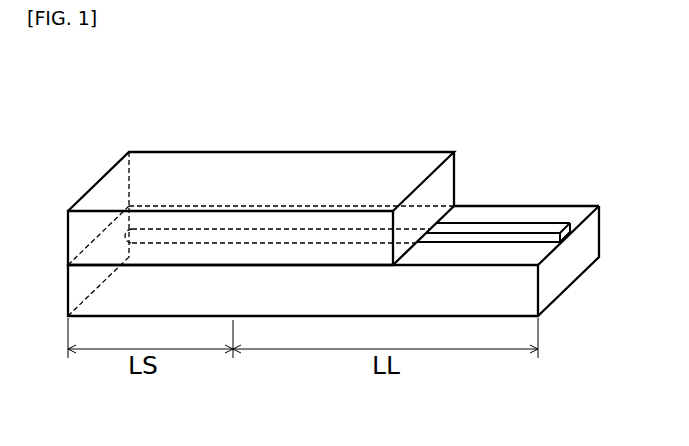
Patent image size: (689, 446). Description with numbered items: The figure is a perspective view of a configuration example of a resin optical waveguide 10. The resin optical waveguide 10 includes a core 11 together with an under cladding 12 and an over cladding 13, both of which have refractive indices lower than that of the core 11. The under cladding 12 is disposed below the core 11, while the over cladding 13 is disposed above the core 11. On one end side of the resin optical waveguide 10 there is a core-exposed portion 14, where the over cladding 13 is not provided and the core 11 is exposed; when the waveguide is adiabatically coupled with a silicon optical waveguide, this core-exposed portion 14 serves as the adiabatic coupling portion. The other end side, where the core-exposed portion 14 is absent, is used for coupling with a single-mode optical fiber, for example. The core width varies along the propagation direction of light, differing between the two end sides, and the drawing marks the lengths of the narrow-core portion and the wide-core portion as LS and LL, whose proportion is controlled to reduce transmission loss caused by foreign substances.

The resin optical waveguide 10 is at (465, 109).
The core 11 is at (523, 238).
The under cladding 12 is at (600, 232).
The over cladding 13 is at (283, 167).
The core-exposed portion 14 is at (523, 178).